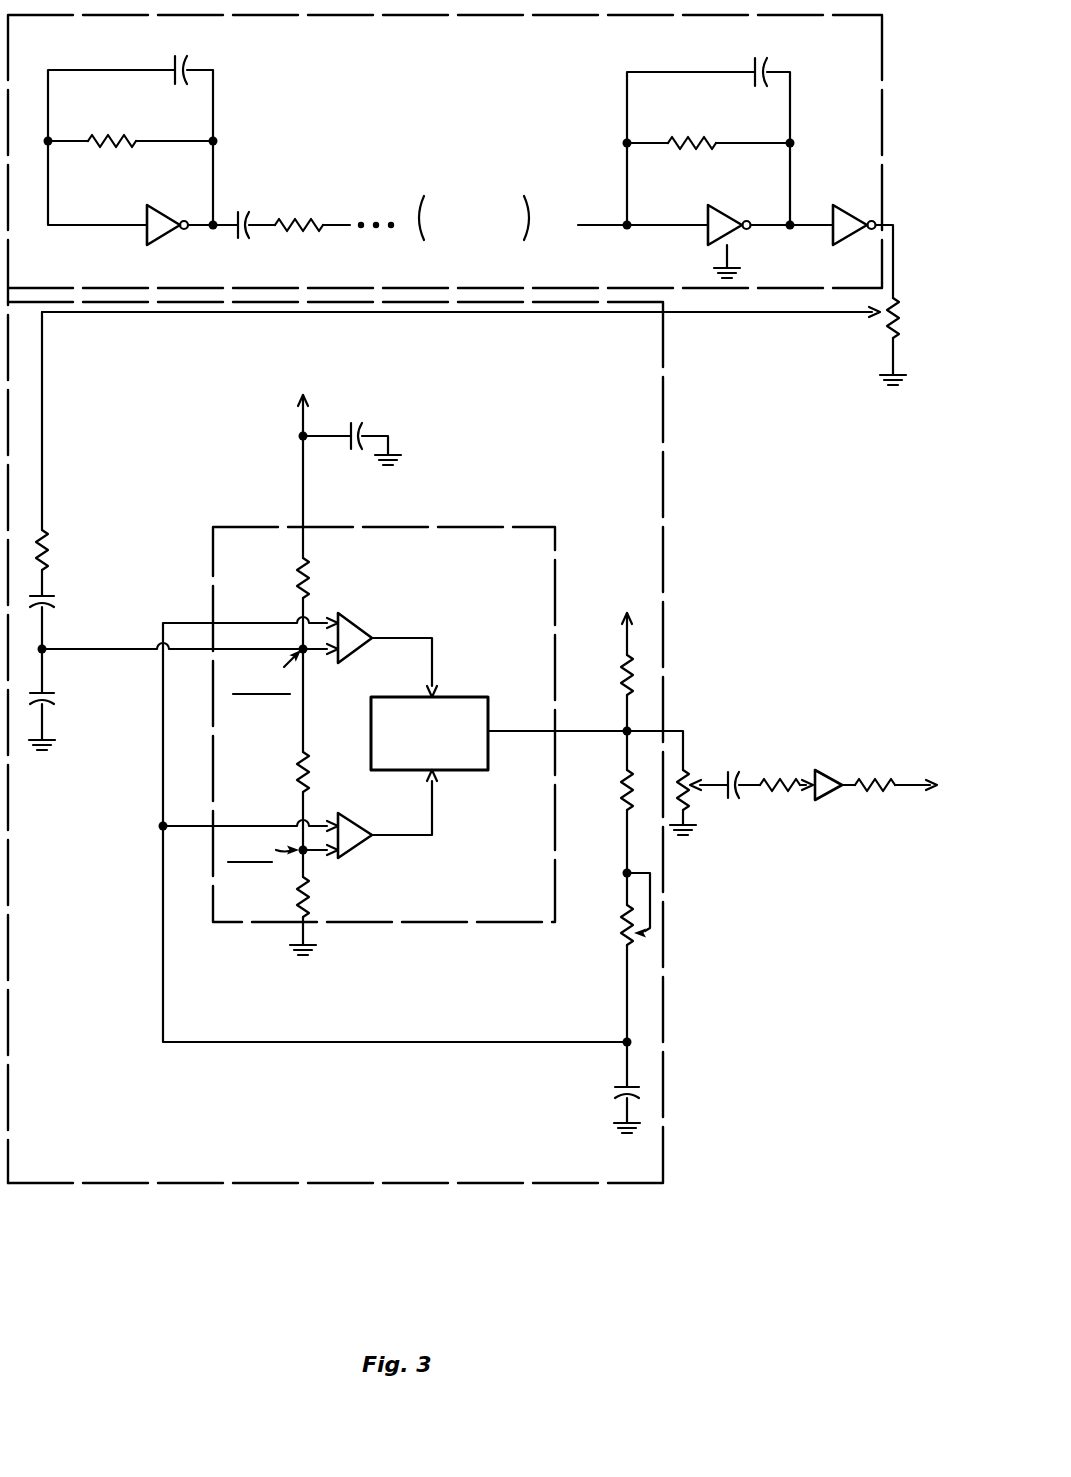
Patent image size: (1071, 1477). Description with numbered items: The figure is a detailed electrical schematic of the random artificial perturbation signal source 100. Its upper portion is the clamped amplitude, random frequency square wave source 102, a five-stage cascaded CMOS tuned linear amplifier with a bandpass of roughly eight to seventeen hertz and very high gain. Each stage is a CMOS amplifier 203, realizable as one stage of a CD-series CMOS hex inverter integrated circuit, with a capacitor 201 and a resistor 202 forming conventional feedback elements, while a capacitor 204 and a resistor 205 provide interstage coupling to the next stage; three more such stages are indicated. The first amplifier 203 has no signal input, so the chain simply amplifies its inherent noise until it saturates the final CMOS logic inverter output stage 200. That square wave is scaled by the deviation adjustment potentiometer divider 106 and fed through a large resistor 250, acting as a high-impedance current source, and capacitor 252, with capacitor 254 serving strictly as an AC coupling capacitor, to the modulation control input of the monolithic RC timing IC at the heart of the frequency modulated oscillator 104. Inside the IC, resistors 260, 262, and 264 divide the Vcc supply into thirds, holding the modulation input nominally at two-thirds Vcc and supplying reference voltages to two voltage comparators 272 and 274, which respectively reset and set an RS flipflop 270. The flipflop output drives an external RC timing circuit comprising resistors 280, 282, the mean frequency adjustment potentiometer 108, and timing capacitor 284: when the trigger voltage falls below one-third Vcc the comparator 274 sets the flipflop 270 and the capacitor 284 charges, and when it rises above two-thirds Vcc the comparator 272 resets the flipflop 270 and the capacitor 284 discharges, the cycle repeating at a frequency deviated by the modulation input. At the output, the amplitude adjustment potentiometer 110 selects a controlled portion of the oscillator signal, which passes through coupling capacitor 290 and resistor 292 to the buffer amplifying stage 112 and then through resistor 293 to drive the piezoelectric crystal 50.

The random artificial perturbation signal source 100 is at (472, 633).
The square wave source 102 is at (883, 66).
The frequency modulated oscillator 104 is at (665, 490).
The frequency deviation control 106 is at (885, 341).
The mean frequency adjustment mechanism 108 is at (622, 946).
The amplitude adjustment potentiometer 110 is at (688, 811).
The buffer amplifying stage 112 is at (815, 801).
The CMOS logic inverter output stage 200 is at (850, 199).
The capacitor 201 is at (190, 58).
The resistor 202 is at (138, 137).
The CMOS amplifier 203 is at (160, 241).
The capacitor 204 is at (246, 209).
The resistor 205 is at (322, 223).
The resistor 250 is at (50, 546).
The capacitor 252 is at (53, 709).
The capacitor 254 is at (50, 602).
The resistor 260 is at (297, 579).
The resistor 262 is at (297, 775).
The resistor 264 is at (298, 896).
The RS flipflop 270 is at (466, 697).
The voltage comparator 272 is at (362, 632).
The voltage comparator 274 is at (363, 825).
The resistor 280 is at (623, 675).
The resistor 282 is at (620, 791).
The timing capacitor 284 is at (620, 1088).
The capacitor 290 is at (739, 786).
The resistor 292 is at (780, 801).
The resistor 293 is at (890, 786).
The piezoelectric crystal 50 is at (913, 864).